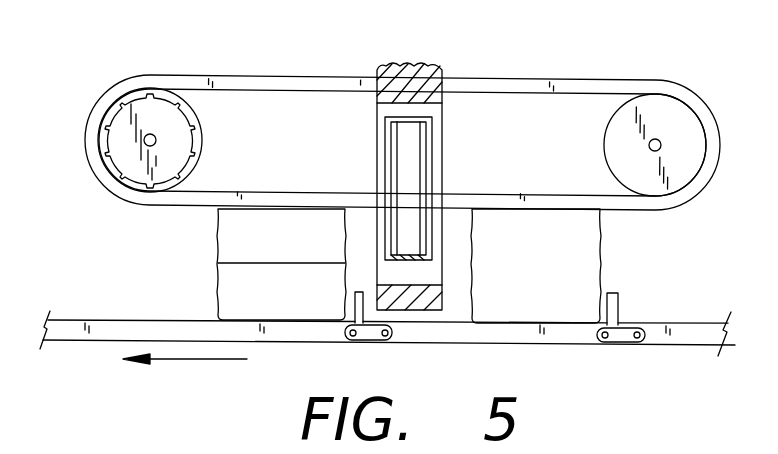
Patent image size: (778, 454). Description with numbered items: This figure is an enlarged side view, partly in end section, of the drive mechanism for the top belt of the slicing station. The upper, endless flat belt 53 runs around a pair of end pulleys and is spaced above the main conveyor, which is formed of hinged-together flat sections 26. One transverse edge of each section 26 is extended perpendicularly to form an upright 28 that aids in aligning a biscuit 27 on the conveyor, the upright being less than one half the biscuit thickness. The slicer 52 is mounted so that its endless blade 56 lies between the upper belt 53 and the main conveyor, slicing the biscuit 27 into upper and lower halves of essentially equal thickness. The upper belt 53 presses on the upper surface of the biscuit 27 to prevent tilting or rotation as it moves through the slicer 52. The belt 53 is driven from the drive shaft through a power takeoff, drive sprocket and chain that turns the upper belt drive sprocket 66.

The upper endless flat belt 53 is at (249, 76).
The upper belt drive sprocket 66 is at (199, 142).
The slicer 52 is at (377, 113).
The endless blade 56 is at (408, 262).
The biscuit 27 is at (218, 293).
The upright 28 is at (619, 306).
The flat section 26 is at (531, 345).